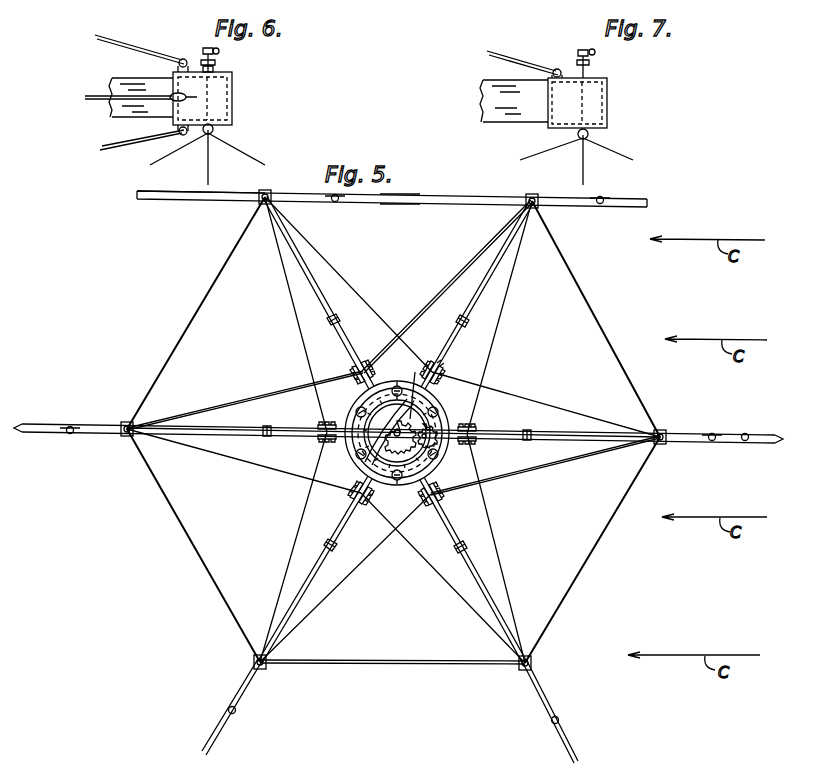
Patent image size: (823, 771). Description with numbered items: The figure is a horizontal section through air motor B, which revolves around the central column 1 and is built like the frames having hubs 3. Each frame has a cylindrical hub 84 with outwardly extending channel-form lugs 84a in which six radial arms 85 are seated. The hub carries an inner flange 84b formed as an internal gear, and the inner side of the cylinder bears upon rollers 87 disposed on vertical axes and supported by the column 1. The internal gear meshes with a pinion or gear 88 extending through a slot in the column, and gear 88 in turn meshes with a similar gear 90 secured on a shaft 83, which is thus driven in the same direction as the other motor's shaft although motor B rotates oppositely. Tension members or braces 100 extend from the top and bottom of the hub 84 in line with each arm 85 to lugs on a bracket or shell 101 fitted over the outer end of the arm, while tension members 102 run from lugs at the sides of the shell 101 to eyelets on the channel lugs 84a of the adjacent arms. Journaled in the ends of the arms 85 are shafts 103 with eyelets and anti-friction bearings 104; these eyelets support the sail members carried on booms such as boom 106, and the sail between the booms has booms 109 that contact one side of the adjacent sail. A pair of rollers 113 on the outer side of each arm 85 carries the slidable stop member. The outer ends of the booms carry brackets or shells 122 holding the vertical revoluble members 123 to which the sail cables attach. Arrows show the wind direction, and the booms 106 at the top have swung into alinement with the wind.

In FIG. 5, the column 1 is at (455, 398).
In FIG. 5, the hub 3 is at (331, 466).
In FIG. 5, the shaft 83 is at (450, 482).
In FIG. 5, the hub 84 is at (447, 379).
In FIG. 5, the lugs 84a is at (355, 381).
In FIG. 5, the inner flange 84b is at (380, 480).
In FIG. 6, the radial arms 85 is at (117, 78).
In FIG. 5, the radial arms 85 is at (330, 305).
In FIG. 5, the rollers 87 is at (356, 411).
In FIG. 5, the gear 88 is at (437, 362).
In FIG. 5, the gear 90 is at (352, 480).
In FIG. 6, the tension members 100 is at (137, 48).
In FIG. 5, the tension members 100 is at (208, 409).
In FIG. 6, the bracket or shell 101 is at (225, 105).
In FIG. 5, the bracket or shell 101 is at (262, 204).
In FIG. 6, the tension members 102 is at (94, 99).
In FIG. 5, the tension members 102 is at (333, 264).
In FIG. 6, the shafts 103 is at (215, 46).
In FIG. 6, the anti-friction bearings 104 is at (225, 72).
In FIG. 5, the anti-friction bearings 104 is at (538, 206).
In FIG. 5, the boom 106 is at (145, 203).
In FIG. 7, the booms 109 is at (522, 110).
In FIG. 5, the booms 109 is at (386, 203).
In FIG. 5, the rollers 113 is at (270, 426).
In FIG. 7, the brackets or shells 122 is at (592, 100).
In FIG. 5, the brackets or shells 122 is at (745, 434).
In FIG. 7, the vertical revoluble members 123 is at (585, 58).
In FIG. 5, the vertical revoluble members 123 is at (333, 195).